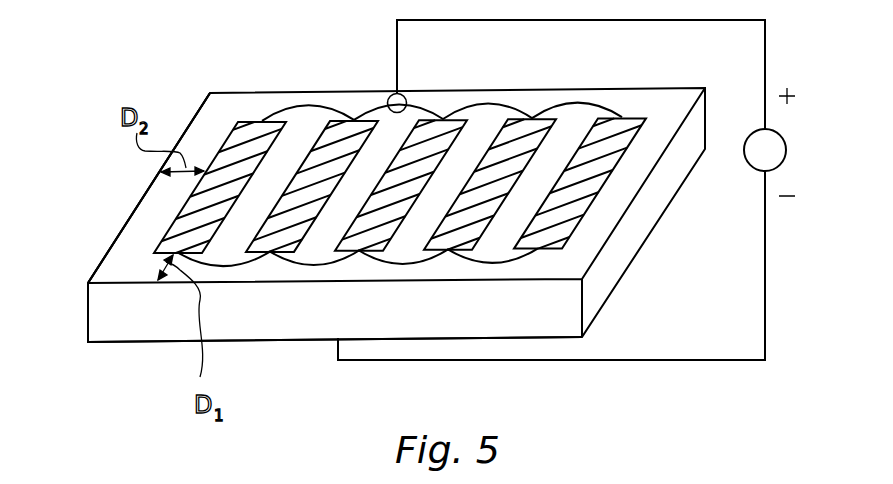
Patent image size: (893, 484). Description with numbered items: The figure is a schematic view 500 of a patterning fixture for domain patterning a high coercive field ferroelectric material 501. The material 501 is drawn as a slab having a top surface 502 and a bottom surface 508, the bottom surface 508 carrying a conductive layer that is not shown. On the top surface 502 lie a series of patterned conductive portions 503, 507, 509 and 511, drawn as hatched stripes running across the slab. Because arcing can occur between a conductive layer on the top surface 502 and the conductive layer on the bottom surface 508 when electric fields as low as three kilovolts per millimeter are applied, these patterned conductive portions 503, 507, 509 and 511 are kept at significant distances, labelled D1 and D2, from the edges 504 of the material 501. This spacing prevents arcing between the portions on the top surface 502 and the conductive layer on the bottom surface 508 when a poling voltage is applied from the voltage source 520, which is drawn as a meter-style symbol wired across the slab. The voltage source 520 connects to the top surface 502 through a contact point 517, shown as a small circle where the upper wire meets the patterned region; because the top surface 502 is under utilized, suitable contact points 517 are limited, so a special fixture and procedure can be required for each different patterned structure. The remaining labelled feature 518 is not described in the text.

The schematic view 500 is at (167, 73).
The high coercive field ferroelectric material 501 is at (88, 308).
The top surface 502 is at (125, 263).
The patterned conductive portion 503 is at (200, 213).
The edges 504 is at (160, 275).
The patterned conductive portion 507 is at (353, 247).
The bottom surface 508 is at (233, 343).
The patterned conductive portion 509 is at (450, 250).
The patterned conductive portion 511 is at (538, 243).
The contact point 517 is at (385, 98).
The corrugated surface 518 is at (312, 103).
The voltage source 520 is at (787, 152).